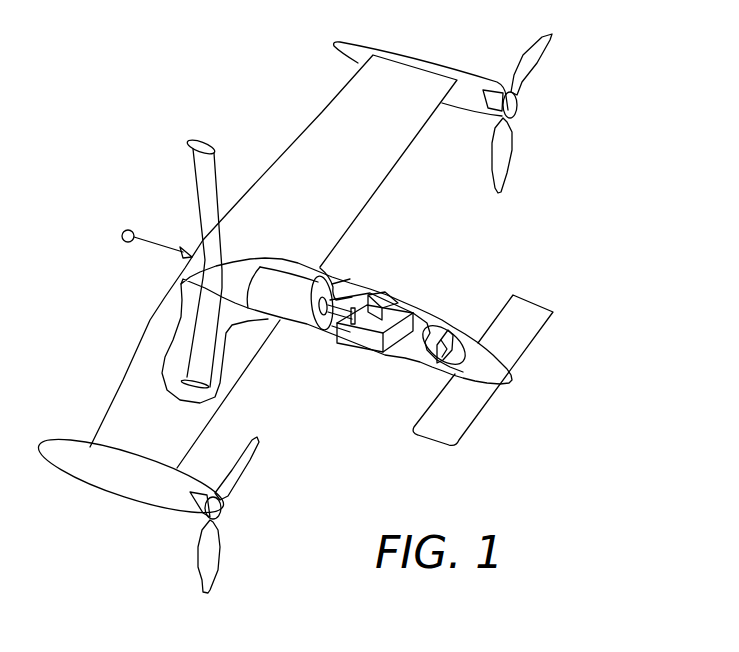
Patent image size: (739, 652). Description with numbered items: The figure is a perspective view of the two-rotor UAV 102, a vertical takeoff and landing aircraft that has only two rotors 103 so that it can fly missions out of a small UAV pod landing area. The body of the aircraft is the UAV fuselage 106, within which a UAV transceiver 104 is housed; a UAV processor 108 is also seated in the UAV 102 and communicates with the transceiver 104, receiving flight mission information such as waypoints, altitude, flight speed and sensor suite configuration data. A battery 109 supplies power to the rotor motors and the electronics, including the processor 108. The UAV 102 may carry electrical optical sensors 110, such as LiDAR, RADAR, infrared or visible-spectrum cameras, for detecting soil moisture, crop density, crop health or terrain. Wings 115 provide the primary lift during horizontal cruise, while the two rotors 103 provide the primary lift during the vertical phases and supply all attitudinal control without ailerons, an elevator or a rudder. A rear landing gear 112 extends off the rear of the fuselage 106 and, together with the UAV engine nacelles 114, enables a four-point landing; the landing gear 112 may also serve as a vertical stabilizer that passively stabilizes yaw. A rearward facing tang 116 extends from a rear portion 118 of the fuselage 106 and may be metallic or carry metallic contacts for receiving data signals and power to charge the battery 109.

The two-rotor UAV 102 is at (439, 297).
The rotors 103 is at (527, 80).
The UAV transceiver 104 is at (298, 322).
The UAV fuselage 106 is at (398, 350).
The UAV processor 108 is at (353, 338).
The battery 109 is at (285, 268).
The electrical optical (EO) sensors 110 is at (322, 281).
The rear landing gear 112 is at (203, 303).
The UAV engine nacelles 114 is at (330, 45).
The wings 115 is at (370, 177).
The rearward facing tang 116 is at (152, 240).
The rear portion 118 is at (178, 257).